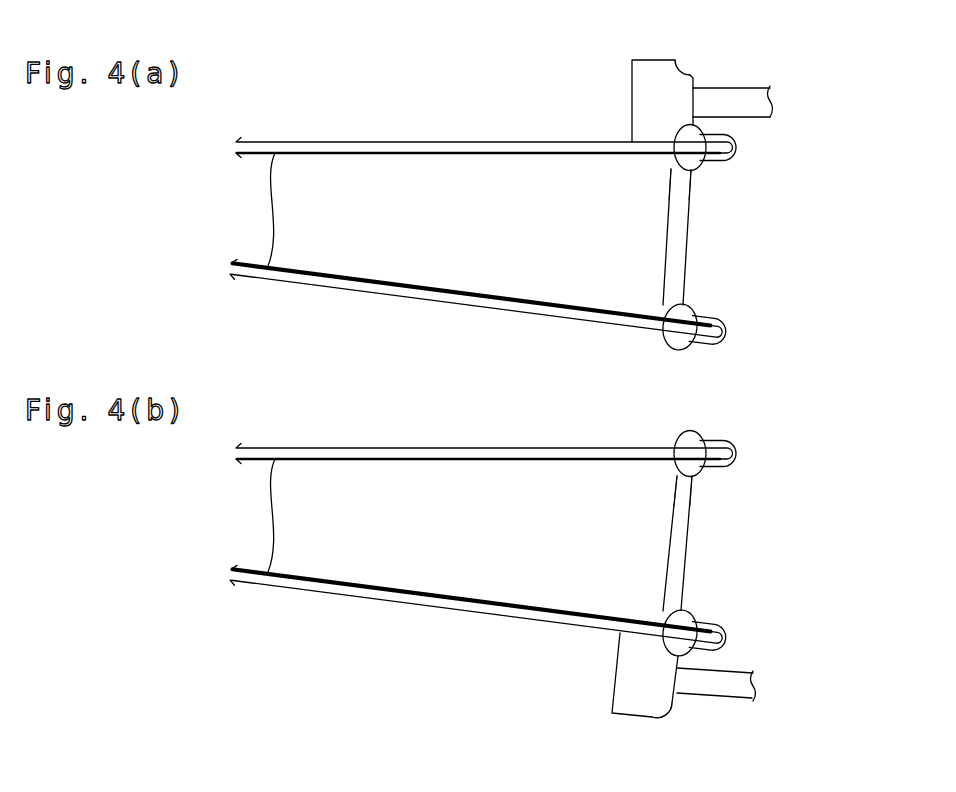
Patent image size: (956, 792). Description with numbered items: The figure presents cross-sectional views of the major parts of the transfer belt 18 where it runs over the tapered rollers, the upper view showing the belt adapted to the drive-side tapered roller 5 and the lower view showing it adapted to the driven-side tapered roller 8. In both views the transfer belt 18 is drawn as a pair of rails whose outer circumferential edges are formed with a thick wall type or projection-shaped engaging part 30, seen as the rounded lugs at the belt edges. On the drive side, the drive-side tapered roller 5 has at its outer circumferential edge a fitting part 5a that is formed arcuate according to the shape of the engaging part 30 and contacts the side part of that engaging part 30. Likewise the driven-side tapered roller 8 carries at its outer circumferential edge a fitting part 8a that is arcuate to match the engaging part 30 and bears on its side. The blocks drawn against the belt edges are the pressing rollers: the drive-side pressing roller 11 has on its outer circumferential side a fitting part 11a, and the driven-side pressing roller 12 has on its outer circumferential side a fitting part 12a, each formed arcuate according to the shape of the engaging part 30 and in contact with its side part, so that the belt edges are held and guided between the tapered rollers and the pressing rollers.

In FIG. 4A, the drive-side tapered roller 5 is at (552, 262).
In FIG. 4A, the fitting part 5a is at (672, 170).
In FIG. 4B, the driven-side tapered roller 8 is at (515, 493).
In FIG. 4B, the fitting part 8a is at (672, 478).
In FIG. 4A, the drive-side pressing roller 11 is at (648, 88).
In FIG. 4A, the fitting part 11a is at (686, 75).
In FIG. 4B, the driven-side pressing roller 12 is at (632, 685).
In FIG. 4B, the fitting part 12a is at (662, 710).
In FIG. 4A, the transfer belt 18 is at (378, 142).
In FIG. 4B, the transfer belt 18 is at (378, 455).
In FIG. 4A, the engaging part 30 is at (701, 171).
In FIG. 4B, the engaging part 30 is at (700, 472).